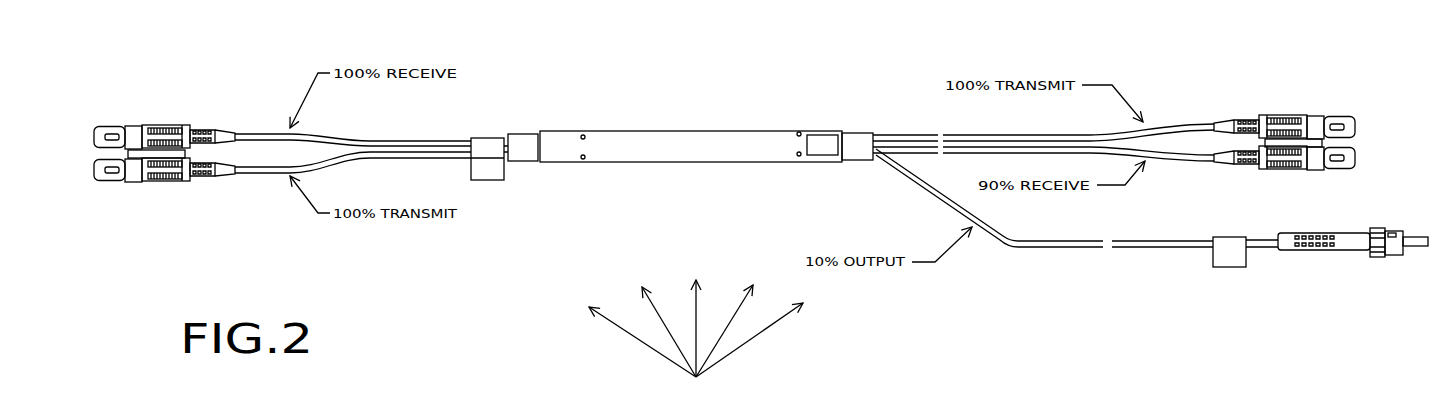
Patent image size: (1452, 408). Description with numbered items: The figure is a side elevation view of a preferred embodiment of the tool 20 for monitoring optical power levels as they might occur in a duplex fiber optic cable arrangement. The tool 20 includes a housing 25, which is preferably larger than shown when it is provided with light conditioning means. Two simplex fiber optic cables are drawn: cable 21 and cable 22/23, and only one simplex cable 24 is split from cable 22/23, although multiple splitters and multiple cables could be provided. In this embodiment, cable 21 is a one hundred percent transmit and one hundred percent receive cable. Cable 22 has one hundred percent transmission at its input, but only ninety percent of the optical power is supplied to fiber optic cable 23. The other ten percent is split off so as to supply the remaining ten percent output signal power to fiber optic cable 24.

The tool 20 is at (698, 378).
The simplex fiber optic cable 21 is at (255, 131).
The fiber optic cable 22 is at (262, 176).
The fiber optic cable 23 is at (1190, 166).
The simplex cable 24 is at (1040, 249).
The housing 25 is at (695, 164).